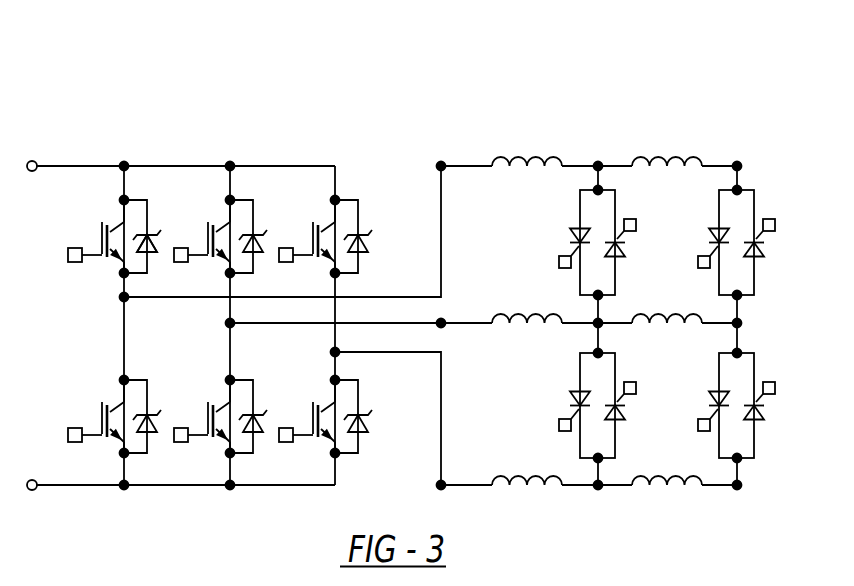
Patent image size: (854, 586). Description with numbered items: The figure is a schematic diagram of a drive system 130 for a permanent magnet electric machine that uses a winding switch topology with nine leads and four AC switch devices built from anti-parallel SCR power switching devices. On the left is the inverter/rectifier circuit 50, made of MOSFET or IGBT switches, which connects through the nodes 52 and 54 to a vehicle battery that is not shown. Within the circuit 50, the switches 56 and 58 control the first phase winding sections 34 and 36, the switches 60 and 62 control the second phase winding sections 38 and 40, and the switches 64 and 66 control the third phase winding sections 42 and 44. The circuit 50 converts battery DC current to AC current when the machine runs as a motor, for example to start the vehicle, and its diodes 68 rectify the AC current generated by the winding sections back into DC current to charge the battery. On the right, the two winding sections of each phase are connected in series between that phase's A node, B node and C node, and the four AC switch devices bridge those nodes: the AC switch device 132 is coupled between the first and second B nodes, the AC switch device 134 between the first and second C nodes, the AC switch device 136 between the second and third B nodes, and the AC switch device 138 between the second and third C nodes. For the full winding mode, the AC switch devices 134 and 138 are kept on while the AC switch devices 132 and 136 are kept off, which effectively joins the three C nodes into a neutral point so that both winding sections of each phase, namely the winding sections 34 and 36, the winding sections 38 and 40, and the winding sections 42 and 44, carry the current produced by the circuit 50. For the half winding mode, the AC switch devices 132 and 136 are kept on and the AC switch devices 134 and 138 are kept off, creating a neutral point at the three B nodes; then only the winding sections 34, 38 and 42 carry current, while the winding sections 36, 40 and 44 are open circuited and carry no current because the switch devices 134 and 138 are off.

The inverter/rectifier circuit 50 is at (241, 291).
The node 52 is at (31, 160).
The node 54 is at (32, 491).
The switch 56 is at (99, 238).
The switch 58 is at (99, 418).
The switch 60 is at (205, 242).
The switch 62 is at (205, 420).
The switch 64 is at (311, 244).
The switch 66 is at (311, 424).
The diode 68 is at (151, 255).
The drive system 130 is at (629, 292).
The first phase winding section 34 is at (536, 156).
The first phase winding section 36 is at (660, 157).
The second phase winding section 38 is at (532, 315).
The second phase winding section 40 is at (680, 315).
The third phase winding section 42 is at (517, 477).
The third phase winding section 44 is at (660, 491).
The AC switch device 132 is at (570, 222).
The AC switch device 134 is at (777, 225).
The AC switch device 136 is at (565, 388).
The AC switch device 138 is at (772, 413).